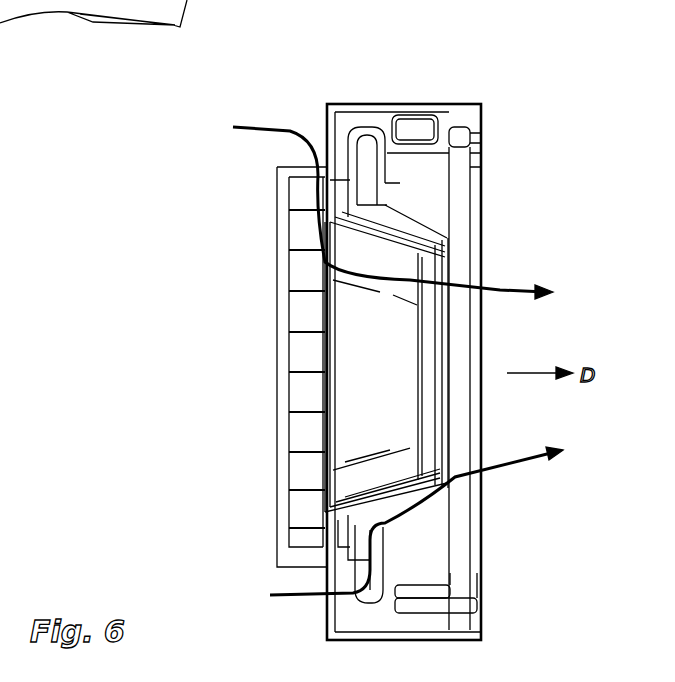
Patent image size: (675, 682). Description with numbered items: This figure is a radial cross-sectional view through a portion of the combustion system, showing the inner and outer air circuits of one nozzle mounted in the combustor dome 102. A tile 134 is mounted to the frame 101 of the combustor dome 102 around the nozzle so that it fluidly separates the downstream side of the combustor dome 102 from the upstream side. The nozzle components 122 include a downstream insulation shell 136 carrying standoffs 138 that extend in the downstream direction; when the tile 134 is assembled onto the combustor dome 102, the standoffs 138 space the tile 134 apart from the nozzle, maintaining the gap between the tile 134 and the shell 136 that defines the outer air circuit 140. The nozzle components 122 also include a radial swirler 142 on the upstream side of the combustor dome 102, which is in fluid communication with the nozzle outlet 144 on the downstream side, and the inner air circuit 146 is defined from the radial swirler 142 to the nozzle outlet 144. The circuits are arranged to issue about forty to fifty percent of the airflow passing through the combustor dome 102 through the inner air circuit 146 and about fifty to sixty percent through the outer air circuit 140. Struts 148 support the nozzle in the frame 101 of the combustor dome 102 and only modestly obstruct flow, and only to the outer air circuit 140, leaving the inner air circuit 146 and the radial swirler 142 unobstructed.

The frame 101 is at (454, 104).
The combustor dome 102 is at (533, 108).
The nozzle components 122 is at (252, 233).
The tile 134 is at (450, 198).
The downstream insulation shell 136 is at (353, 178).
The standoffs 138 is at (367, 185).
The outer air circuit 140 is at (457, 477).
The radial swirler 142 is at (275, 490).
The nozzle outlet 144 is at (450, 357).
The inner air circuit 146 is at (352, 375).
The struts 148 is at (321, 105).